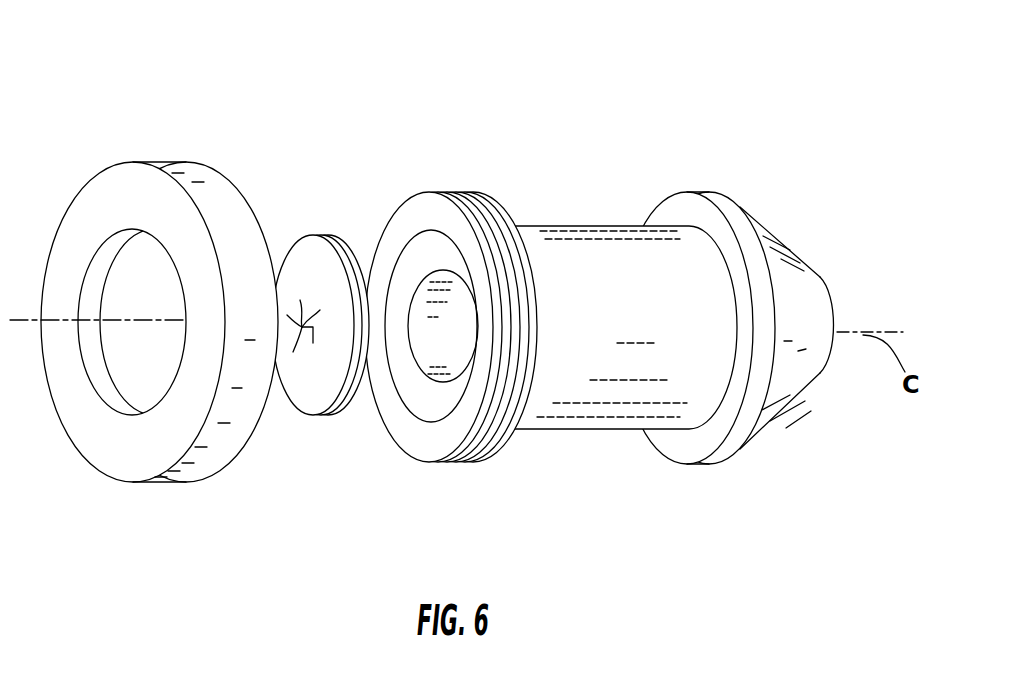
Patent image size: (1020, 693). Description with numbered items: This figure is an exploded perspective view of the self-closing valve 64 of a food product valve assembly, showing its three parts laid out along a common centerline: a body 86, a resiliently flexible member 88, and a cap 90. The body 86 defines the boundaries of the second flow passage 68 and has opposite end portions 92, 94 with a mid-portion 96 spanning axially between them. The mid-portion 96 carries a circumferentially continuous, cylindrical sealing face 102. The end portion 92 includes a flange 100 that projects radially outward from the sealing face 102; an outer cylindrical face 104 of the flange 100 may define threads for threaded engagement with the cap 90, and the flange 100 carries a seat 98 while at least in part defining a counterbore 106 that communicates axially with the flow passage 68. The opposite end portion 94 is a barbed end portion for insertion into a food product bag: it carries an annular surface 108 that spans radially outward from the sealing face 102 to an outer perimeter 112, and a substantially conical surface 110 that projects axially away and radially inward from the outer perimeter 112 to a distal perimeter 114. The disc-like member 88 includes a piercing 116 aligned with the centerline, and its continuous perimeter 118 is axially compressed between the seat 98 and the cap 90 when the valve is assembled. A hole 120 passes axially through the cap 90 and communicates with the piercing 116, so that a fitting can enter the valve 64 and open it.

The valve 64 is at (754, 318).
The second flow passage 68 is at (438, 340).
The body 86 is at (535, 292).
The member 88 is at (314, 291).
The cap 90 is at (159, 276).
The end portion 92 is at (435, 314).
The end portion 94 is at (698, 333).
The mid-portion 96 is at (624, 339).
The seat 98 is at (438, 398).
The flange 100 is at (470, 190).
The sealing face 102 is at (573, 432).
The outer cylindrical face 104 is at (487, 433).
The counterbore 106 is at (412, 268).
The annular surface 108 is at (683, 445).
The conical surface 110 is at (783, 240).
The outer perimeter 112 is at (704, 467).
The distal perimeter 114 is at (826, 288).
The piercing 116 is at (303, 344).
The continuous perimeter 118 is at (302, 234).
The hole 120 is at (162, 365).